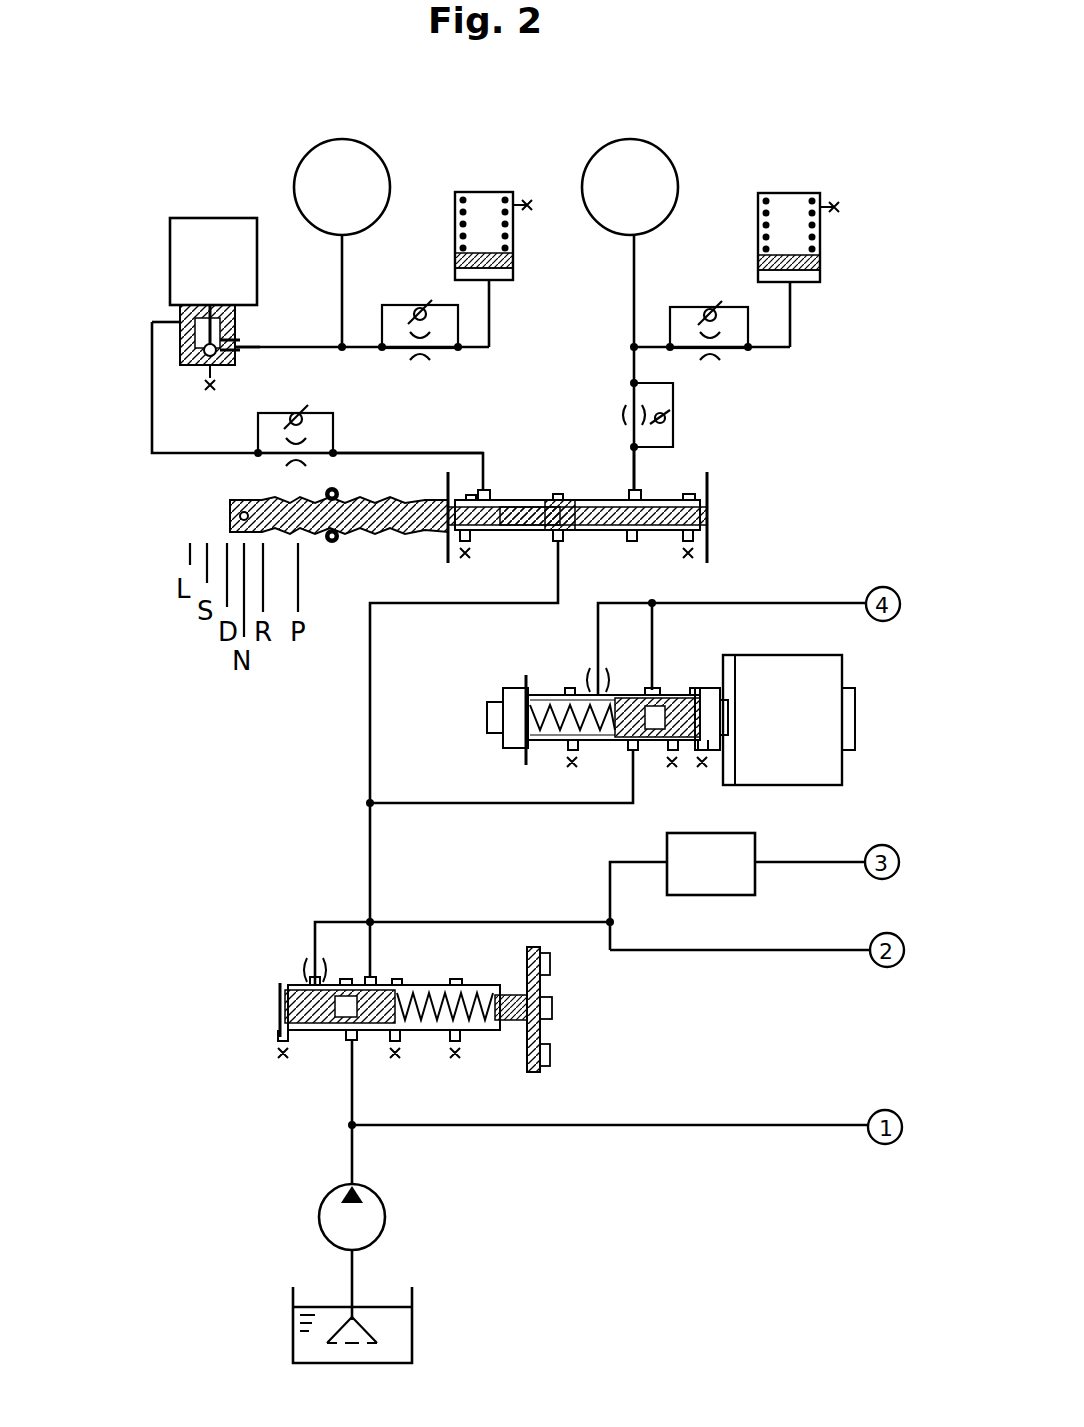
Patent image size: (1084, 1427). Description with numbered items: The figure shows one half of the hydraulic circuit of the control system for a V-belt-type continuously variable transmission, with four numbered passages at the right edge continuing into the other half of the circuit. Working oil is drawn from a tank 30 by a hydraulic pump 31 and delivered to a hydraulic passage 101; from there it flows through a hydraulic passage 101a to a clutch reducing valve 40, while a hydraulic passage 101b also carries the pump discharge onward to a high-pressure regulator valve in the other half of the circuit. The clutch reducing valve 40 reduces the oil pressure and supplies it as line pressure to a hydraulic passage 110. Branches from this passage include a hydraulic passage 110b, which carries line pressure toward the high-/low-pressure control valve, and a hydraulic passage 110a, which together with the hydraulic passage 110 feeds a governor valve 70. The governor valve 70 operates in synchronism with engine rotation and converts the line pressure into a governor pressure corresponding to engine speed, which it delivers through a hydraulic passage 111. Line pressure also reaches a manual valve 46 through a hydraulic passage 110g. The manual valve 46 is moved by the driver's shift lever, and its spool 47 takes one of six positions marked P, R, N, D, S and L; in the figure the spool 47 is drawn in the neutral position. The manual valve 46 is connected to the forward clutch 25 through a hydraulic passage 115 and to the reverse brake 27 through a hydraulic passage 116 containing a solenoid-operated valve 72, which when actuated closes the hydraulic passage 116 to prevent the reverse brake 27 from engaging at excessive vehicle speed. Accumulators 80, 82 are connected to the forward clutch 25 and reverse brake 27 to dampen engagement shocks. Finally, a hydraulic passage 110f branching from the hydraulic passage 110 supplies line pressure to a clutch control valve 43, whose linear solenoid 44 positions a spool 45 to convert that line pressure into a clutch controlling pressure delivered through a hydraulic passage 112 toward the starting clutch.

The solenoid-operated valve 72 is at (163, 252).
The reverse brake 27 is at (368, 203).
The accumulator 82 is at (513, 258).
The forward clutch 25 is at (656, 203).
The accumulator 80 is at (820, 245).
The hydraulic passage 116 is at (416, 428).
The hydraulic passage 115 is at (631, 463).
The manual valve 46 is at (726, 510).
The spool 47 is at (514, 527).
The hydraulic passage 112 is at (752, 603).
The hydraulic passage 110g is at (443, 605).
The clutch control valve 43 is at (864, 710).
The linear solenoid 44 is at (833, 767).
The spool 45 is at (623, 745).
The governor valve 70 is at (727, 832).
The hydraulic passage 110f is at (482, 804).
The hydraulic passage 110a is at (608, 890).
The hydraulic passage 111 is at (805, 867).
The hydraulic passage 110b is at (780, 953).
The hydraulic passage 110 is at (372, 950).
The clutch reducing valve 40 is at (553, 1012).
The hydraulic passage 101a is at (354, 1088).
The hydraulic passage 101 is at (350, 1148).
The hydraulic passage 101b is at (668, 1128).
The hydraulic pump 31 is at (388, 1216).
The tank 30 is at (413, 1320).